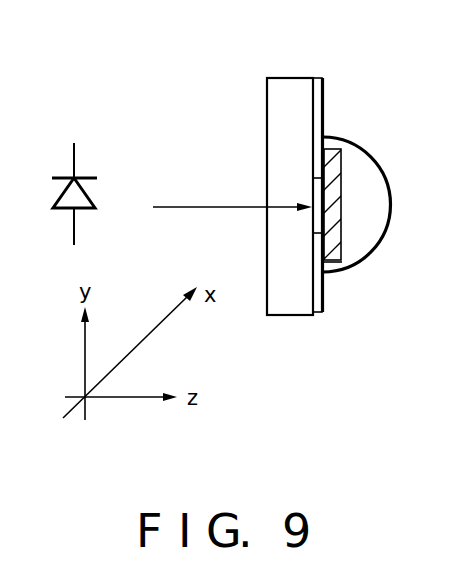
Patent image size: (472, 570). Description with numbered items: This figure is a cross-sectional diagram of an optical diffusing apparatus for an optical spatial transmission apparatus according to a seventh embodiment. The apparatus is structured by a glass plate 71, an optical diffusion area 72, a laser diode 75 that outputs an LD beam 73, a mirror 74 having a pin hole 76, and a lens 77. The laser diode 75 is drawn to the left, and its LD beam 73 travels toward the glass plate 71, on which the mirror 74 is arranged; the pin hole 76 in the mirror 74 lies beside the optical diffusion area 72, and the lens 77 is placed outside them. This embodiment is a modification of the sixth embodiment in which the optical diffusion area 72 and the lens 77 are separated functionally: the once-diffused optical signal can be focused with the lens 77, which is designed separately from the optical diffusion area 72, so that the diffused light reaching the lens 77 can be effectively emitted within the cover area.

The glass plate 71 is at (272, 78).
The optical diffusion area 72 is at (330, 253).
The LD beam 73 is at (167, 206).
The mirror 74 is at (317, 78).
The laser diode 75 is at (73, 145).
The pin hole 76 is at (321, 192).
The lens 77 is at (392, 227).